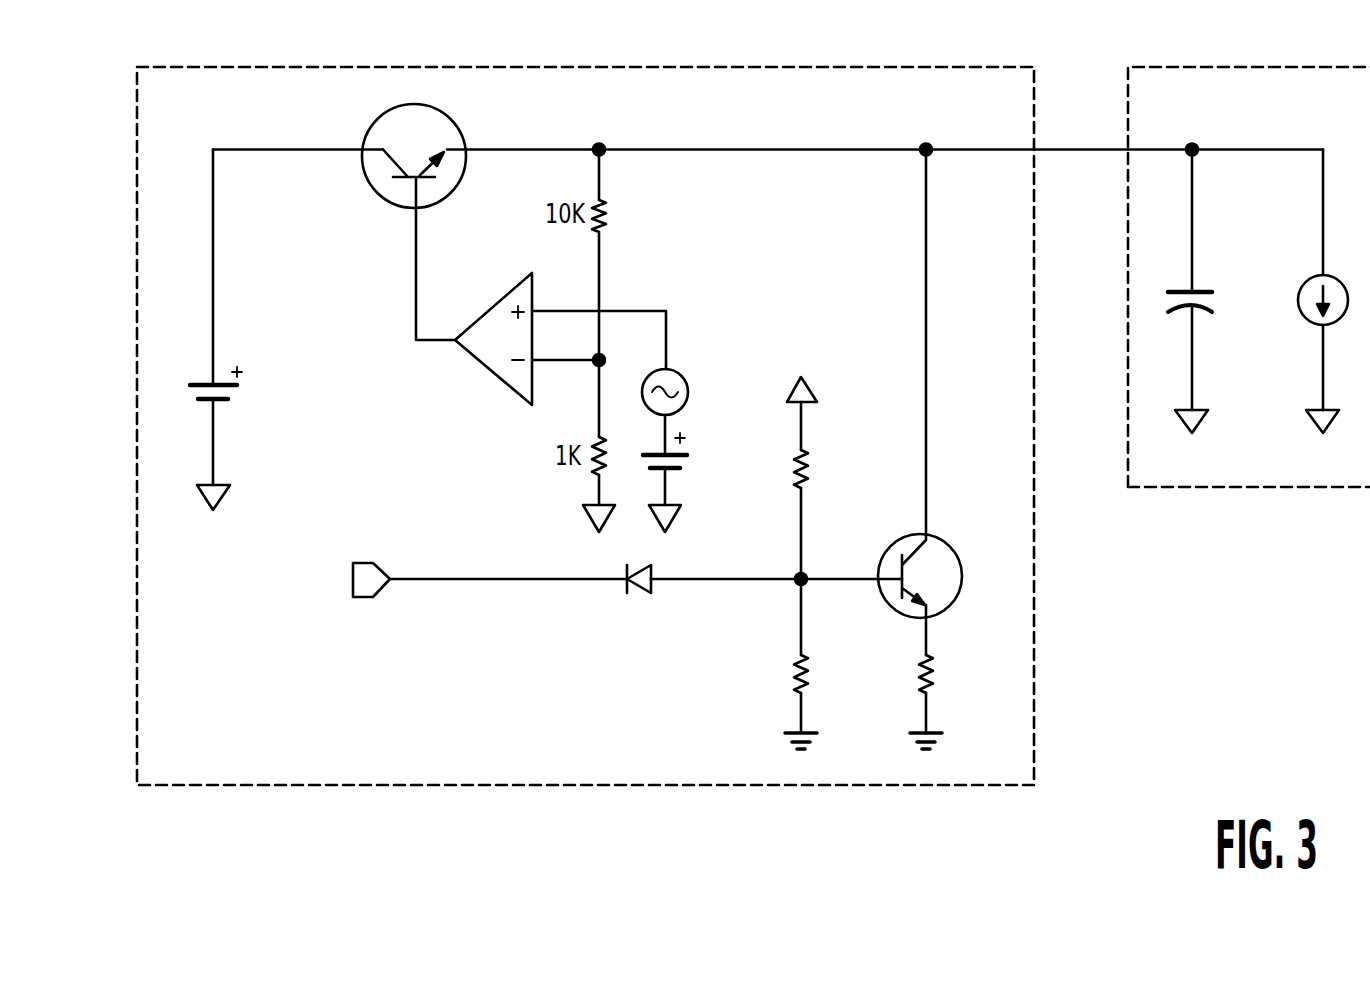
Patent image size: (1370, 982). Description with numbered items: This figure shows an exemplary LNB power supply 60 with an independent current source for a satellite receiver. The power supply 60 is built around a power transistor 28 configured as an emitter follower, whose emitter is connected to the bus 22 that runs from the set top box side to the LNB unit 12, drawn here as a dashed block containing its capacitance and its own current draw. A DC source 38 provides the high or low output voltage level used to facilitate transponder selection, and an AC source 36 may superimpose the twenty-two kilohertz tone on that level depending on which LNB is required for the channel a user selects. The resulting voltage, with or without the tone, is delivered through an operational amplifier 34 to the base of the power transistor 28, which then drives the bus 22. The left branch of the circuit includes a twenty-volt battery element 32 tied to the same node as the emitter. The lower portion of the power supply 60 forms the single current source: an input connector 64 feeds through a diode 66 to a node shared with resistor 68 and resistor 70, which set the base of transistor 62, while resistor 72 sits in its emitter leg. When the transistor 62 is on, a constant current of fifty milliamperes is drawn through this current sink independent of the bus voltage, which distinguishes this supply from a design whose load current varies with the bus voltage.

The LNB unit 12 is at (1280, 67).
The bus 22 is at (1072, 149).
The power transistor 28 is at (372, 132).
The battery 32 is at (205, 385).
The operational amplifier 34 is at (490, 312).
The AC source 36 is at (683, 370).
The DC source 38 is at (680, 470).
The power supply 60 is at (177, 68).
The transistor 62 is at (953, 543).
The input terminal 64 is at (360, 563).
The diode 66 is at (643, 593).
The resistor 68 is at (805, 470).
The resistor 70 is at (805, 680).
The resistor 72 is at (930, 680).